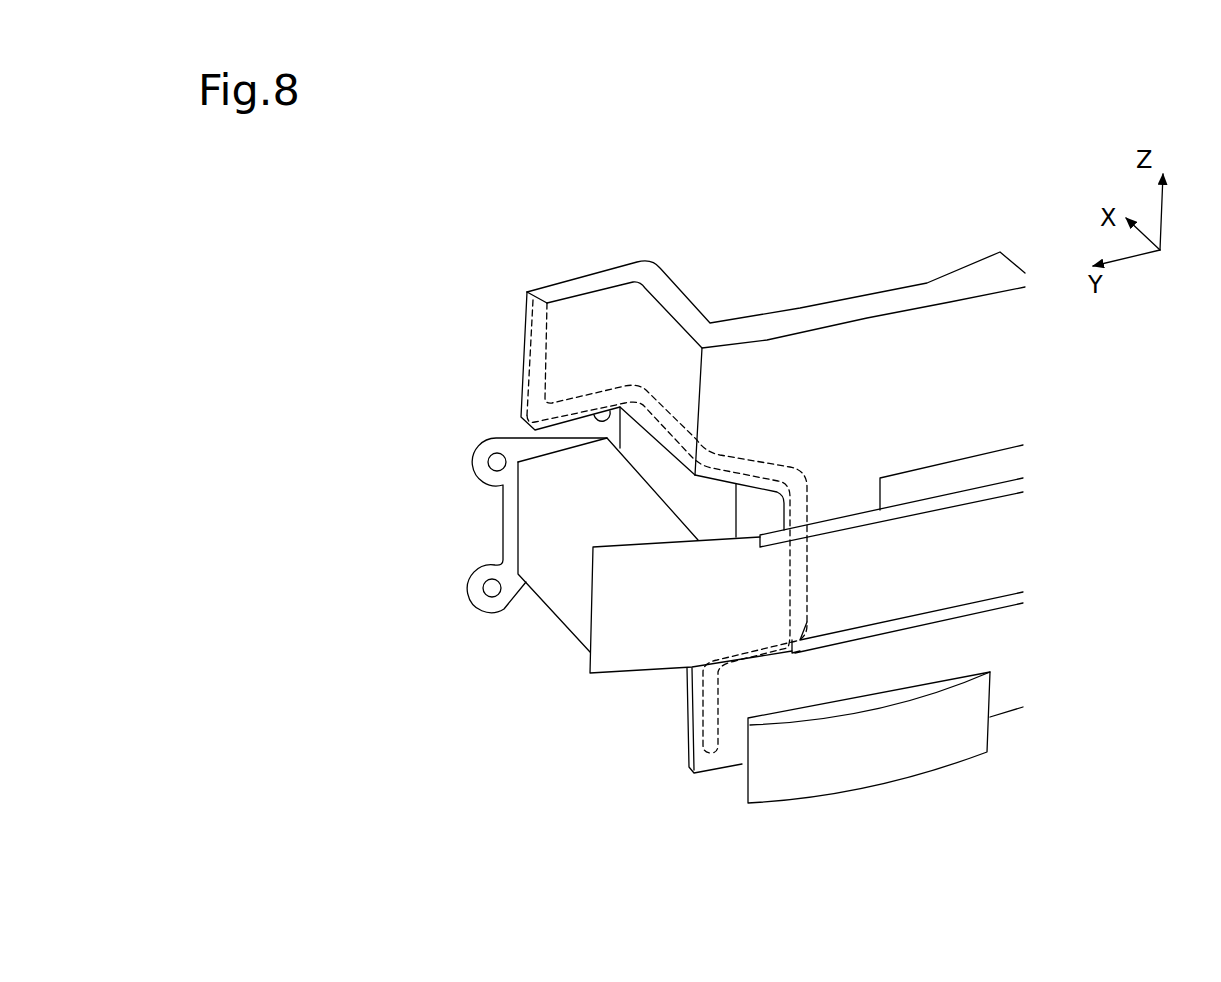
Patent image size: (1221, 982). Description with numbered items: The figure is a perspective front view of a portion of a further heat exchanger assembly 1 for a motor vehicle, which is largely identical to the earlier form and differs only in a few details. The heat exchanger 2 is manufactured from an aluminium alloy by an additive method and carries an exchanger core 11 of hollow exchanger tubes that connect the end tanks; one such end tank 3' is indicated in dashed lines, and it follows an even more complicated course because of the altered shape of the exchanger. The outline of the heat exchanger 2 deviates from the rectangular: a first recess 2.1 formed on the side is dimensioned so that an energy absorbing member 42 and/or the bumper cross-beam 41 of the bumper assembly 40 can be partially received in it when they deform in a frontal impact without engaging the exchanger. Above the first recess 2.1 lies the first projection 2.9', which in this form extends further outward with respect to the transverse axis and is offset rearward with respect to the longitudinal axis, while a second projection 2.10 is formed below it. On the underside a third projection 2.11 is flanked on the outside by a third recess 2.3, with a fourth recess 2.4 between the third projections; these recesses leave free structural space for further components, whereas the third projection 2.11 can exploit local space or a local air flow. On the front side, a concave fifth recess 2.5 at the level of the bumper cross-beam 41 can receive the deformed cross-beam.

The heat exchanger assembly 1 is at (775, 246).
The heat exchanger 2 is at (868, 297).
The first recess 2.1 is at (705, 519).
The third recess 2.3 is at (706, 785).
The fourth recess 2.4 is at (1019, 729).
The fifth recess 2.5 is at (978, 475).
The first projection 2.9' is at (542, 357).
The second projection 2.10 is at (642, 710).
The third projection 2.11 is at (948, 781).
The end tank 3' is at (607, 316).
The exchanger core 11 is at (827, 285).
The bumper assembly 40 is at (452, 587).
The bumper cross-beam 41 is at (1013, 553).
The energy absorbing member 42 is at (540, 525).